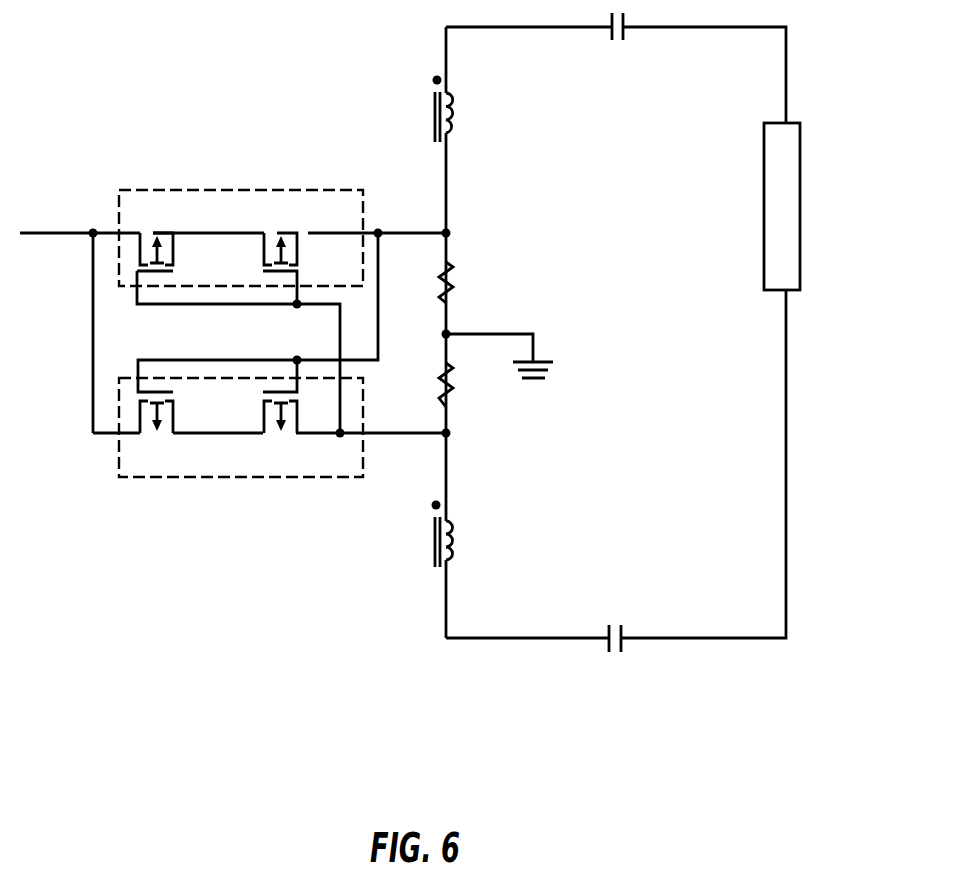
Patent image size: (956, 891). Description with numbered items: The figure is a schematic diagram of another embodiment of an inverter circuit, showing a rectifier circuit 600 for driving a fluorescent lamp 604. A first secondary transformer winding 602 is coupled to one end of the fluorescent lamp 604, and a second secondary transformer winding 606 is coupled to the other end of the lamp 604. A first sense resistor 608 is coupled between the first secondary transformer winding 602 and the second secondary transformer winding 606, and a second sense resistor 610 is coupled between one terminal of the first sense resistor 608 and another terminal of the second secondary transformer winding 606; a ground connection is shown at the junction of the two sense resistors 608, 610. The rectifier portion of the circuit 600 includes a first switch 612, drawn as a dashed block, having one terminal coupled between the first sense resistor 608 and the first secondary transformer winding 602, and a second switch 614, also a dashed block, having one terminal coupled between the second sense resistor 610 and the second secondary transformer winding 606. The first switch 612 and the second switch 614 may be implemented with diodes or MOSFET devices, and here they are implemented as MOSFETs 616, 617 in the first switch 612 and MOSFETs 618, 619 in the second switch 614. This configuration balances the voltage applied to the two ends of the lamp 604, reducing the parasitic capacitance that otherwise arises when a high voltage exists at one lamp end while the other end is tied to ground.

The rectifier circuit 600 is at (146, 106).
The first secondary transformer winding 602 is at (462, 113).
The fluorescent lamp 604 is at (800, 193).
The second secondary transformer winding 606 is at (462, 538).
The first sense resistor 608 is at (457, 292).
The second sense resistor 610 is at (457, 393).
The first switch 612 is at (147, 188).
The second switch 614 is at (155, 478).
The MOSFET 616 is at (140, 231).
The MOSFET 617 is at (263, 231).
The MOSFET 618 is at (140, 435).
The MOSFET 619 is at (263, 435).